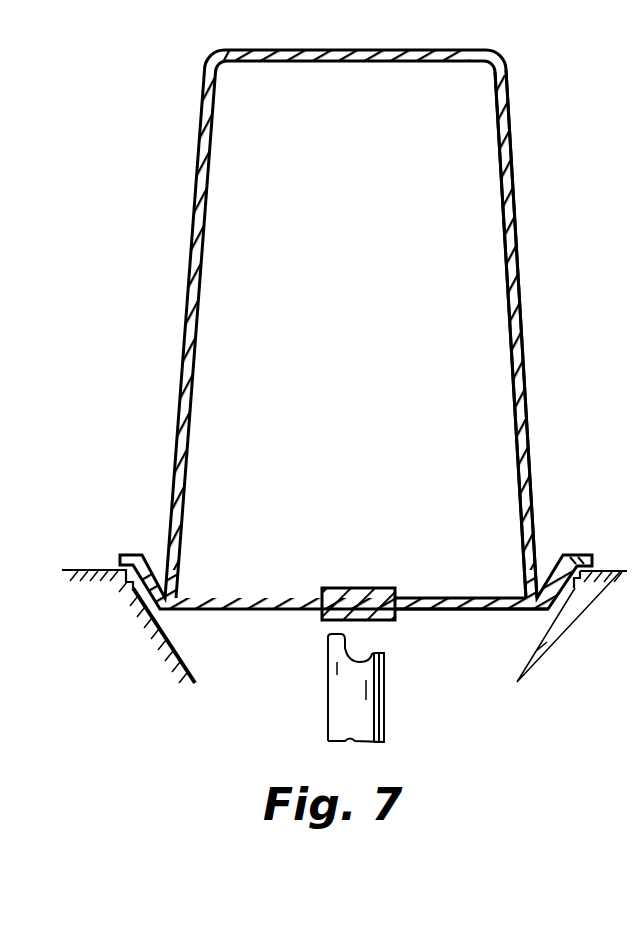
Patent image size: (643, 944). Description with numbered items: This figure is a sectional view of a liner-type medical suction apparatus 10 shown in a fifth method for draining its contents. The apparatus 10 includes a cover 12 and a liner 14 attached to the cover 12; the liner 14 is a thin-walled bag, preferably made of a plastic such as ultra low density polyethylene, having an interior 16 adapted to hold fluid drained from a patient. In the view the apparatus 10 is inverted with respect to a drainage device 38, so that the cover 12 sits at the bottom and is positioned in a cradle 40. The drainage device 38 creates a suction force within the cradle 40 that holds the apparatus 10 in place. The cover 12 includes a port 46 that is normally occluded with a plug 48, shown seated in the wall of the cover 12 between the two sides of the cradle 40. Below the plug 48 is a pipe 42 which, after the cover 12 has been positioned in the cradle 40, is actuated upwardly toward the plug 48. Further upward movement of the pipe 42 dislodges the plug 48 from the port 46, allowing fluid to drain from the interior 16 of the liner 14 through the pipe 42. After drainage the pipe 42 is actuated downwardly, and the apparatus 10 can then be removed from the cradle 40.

The liner-type medical suction apparatus 10 is at (505, 80).
The cover 12 is at (588, 546).
The liner 14 is at (512, 205).
The interior 16 is at (470, 138).
The drainage device 38 is at (153, 630).
The cradle 40 is at (517, 645).
The pipe 42 is at (338, 697).
The port 46 is at (396, 596).
The plug 48 is at (352, 588).